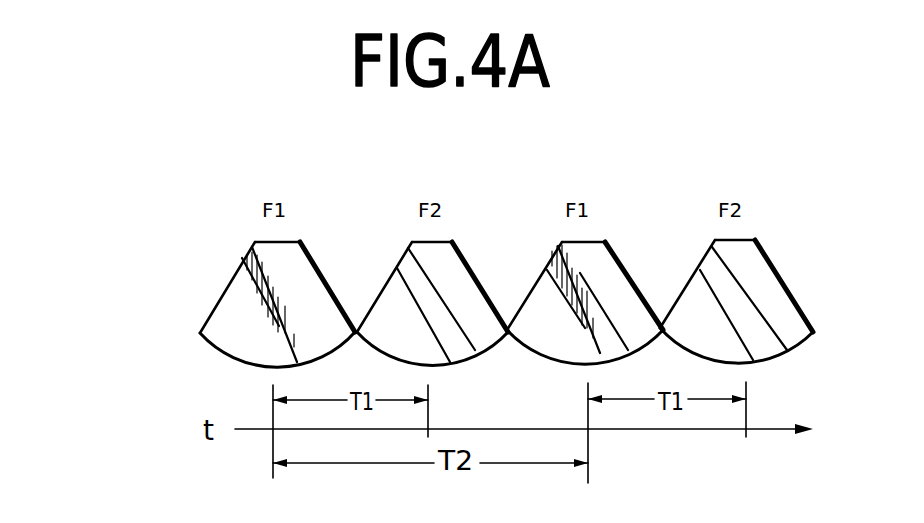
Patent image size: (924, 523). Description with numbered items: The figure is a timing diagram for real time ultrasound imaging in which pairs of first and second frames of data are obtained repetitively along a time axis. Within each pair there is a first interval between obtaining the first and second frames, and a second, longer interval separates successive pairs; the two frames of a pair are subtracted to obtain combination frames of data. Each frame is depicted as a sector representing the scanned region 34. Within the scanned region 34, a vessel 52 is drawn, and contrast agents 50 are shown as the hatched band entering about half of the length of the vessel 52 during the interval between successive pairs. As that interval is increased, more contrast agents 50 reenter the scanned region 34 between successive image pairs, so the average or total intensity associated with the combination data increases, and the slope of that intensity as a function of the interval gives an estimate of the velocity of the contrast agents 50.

The scanned region 34 is at (221, 300).
The contrast agents 50 is at (248, 258).
The vessel 52 is at (279, 326).